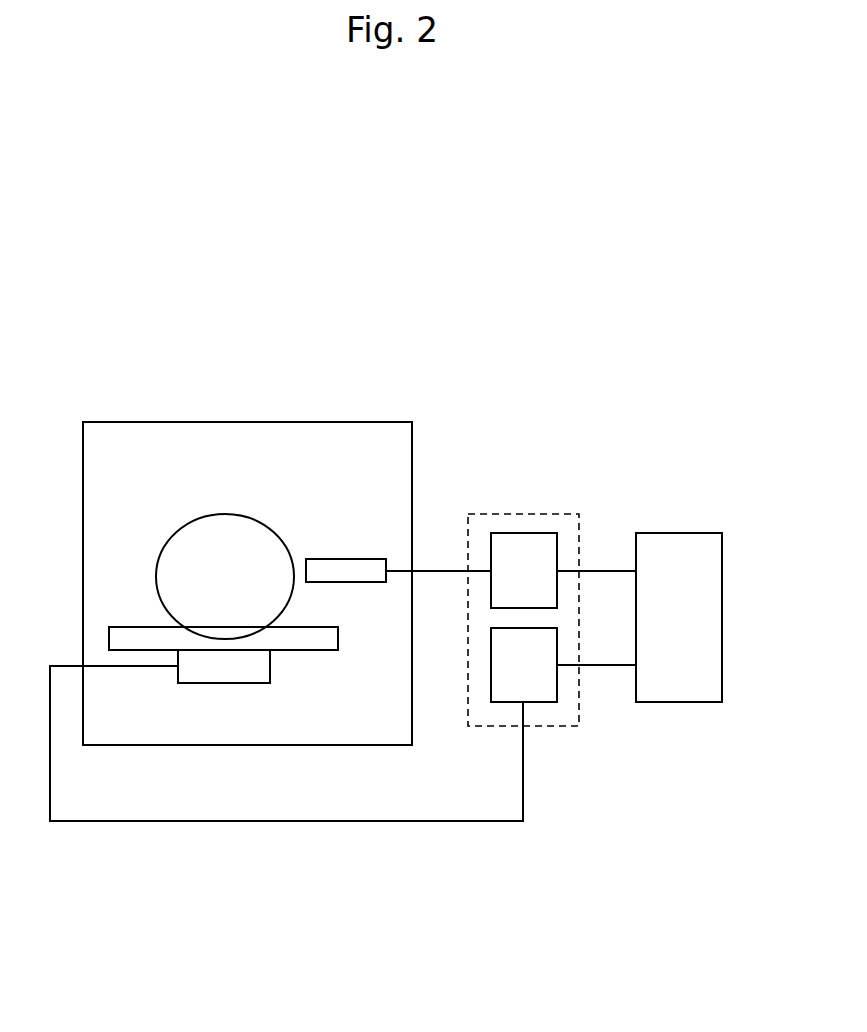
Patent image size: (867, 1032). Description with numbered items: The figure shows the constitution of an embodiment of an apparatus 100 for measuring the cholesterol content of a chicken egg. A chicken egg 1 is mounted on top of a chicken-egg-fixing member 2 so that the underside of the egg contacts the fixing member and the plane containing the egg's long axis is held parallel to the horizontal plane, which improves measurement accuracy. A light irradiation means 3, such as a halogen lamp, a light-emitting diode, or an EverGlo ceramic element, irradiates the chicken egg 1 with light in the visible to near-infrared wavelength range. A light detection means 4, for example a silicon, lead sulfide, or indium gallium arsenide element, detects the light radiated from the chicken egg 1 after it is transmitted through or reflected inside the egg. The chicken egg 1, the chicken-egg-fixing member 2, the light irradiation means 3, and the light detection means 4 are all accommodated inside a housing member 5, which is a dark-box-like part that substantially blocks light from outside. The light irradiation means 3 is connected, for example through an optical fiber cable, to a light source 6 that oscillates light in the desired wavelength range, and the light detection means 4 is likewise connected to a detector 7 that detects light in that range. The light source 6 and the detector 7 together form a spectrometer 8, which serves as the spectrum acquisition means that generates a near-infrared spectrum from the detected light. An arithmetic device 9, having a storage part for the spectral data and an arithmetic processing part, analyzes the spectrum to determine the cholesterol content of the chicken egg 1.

The chicken egg 1 is at (156, 568).
The chicken-egg-fixing member 2 is at (109, 638).
The light irradiation means 3 is at (347, 559).
The light detection means 4 is at (224, 683).
The housing member 5 is at (390, 422).
The light source 6 is at (522, 533).
The detector 7 is at (538, 702).
The spectrometer 8 is at (566, 514).
The arithmetic device 9 is at (722, 612).
The apparatus 100 is at (658, 419).